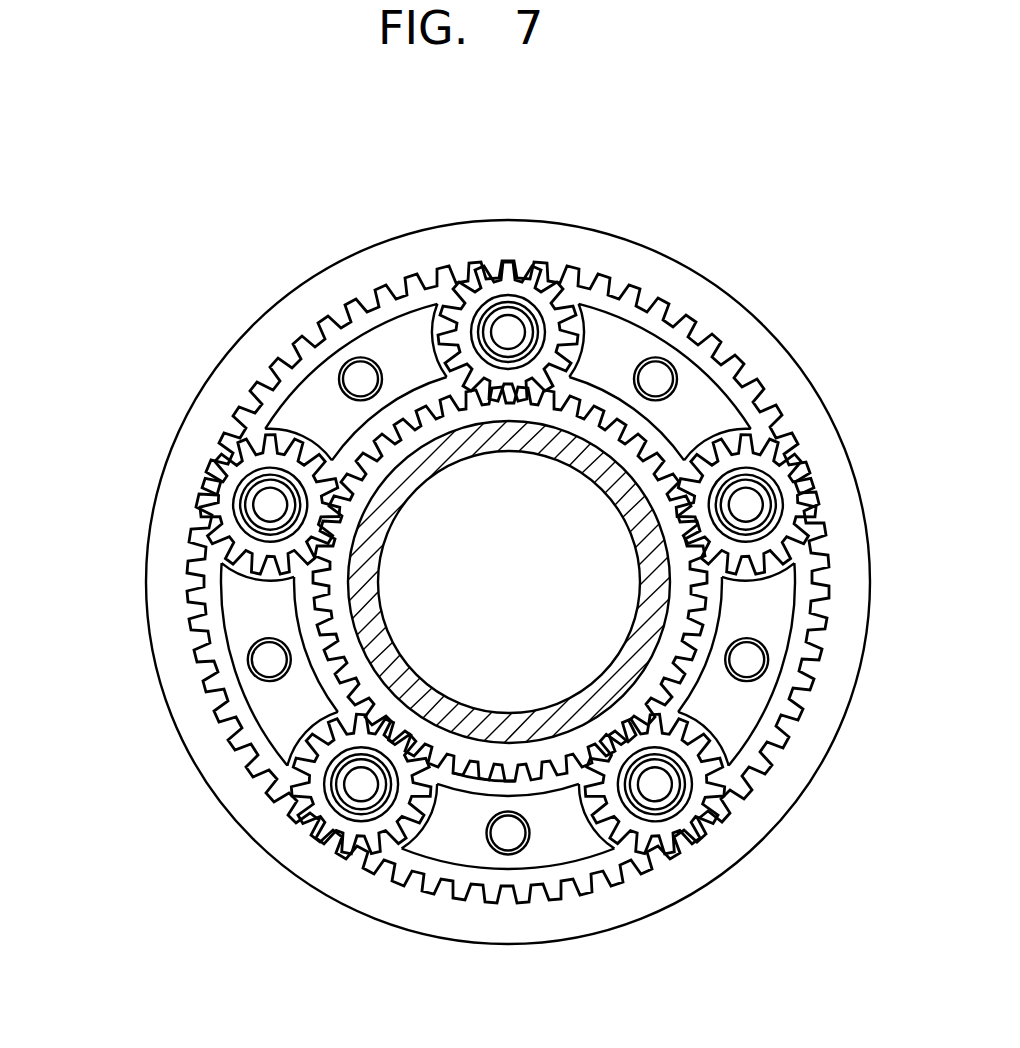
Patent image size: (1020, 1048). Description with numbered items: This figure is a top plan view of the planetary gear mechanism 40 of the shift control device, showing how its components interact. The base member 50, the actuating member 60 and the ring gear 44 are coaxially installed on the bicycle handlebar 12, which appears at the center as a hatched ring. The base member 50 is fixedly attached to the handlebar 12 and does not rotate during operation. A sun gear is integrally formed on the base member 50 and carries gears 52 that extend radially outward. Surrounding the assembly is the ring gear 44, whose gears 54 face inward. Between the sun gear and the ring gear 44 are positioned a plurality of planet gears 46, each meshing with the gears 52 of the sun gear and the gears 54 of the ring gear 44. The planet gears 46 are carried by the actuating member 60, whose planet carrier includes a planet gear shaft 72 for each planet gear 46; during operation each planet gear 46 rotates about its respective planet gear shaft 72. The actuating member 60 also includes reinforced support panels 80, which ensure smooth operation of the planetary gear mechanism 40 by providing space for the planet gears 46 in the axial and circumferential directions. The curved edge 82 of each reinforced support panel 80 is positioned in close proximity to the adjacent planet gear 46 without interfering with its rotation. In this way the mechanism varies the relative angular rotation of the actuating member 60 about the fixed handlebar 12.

The bicycle handlebar 12 is at (363, 550).
The planetary gear mechanism 40 is at (74, 358).
The ring gear 44 is at (152, 520).
The planet gear 46 is at (297, 801).
The base member 50 is at (363, 477).
The gears of the sun gear 52 is at (450, 773).
The gears of the ring gear 54 is at (192, 585).
The actuating member 60 is at (257, 387).
The planet gear shaft 72 is at (362, 786).
The reinforced support panel 80 is at (550, 838).
The curved edge 82 is at (265, 734).